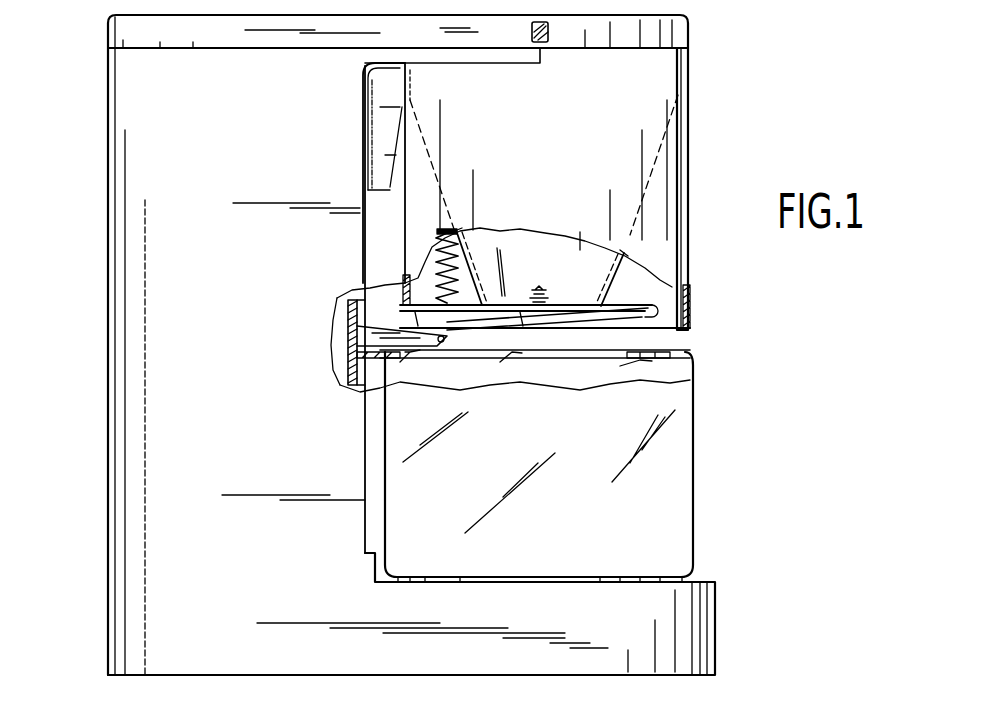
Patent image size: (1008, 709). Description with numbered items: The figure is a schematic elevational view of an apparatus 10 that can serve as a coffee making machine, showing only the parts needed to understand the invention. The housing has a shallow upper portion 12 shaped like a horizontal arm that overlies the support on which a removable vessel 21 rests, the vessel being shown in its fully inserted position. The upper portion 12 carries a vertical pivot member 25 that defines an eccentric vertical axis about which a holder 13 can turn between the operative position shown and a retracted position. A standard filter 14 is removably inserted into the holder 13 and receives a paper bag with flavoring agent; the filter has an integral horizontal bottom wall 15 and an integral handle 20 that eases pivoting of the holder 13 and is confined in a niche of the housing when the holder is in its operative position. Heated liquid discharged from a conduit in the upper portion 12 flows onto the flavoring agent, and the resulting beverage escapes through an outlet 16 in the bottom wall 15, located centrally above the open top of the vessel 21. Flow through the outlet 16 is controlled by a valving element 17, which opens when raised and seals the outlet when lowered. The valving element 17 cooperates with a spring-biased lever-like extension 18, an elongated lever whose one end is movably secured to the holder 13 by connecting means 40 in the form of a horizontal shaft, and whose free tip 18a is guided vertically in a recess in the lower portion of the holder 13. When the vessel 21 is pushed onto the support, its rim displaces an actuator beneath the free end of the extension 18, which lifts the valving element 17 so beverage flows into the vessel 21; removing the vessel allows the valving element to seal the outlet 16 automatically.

The apparatus 10 is at (100, 348).
The upper portion of the housing 12 is at (607, 16).
The holder 13 is at (695, 150).
The filter 14 is at (625, 293).
The bottom wall 15 is at (568, 304).
The outlet 16 is at (532, 302).
The valving element 17 is at (539, 286).
The lever-like extension 18 is at (483, 322).
The tip of the extension 18a is at (363, 287).
The handle 20 is at (385, 182).
The vessel 21 is at (715, 456).
The pivot member 25 is at (550, 48).
The connecting means 40 is at (690, 318).